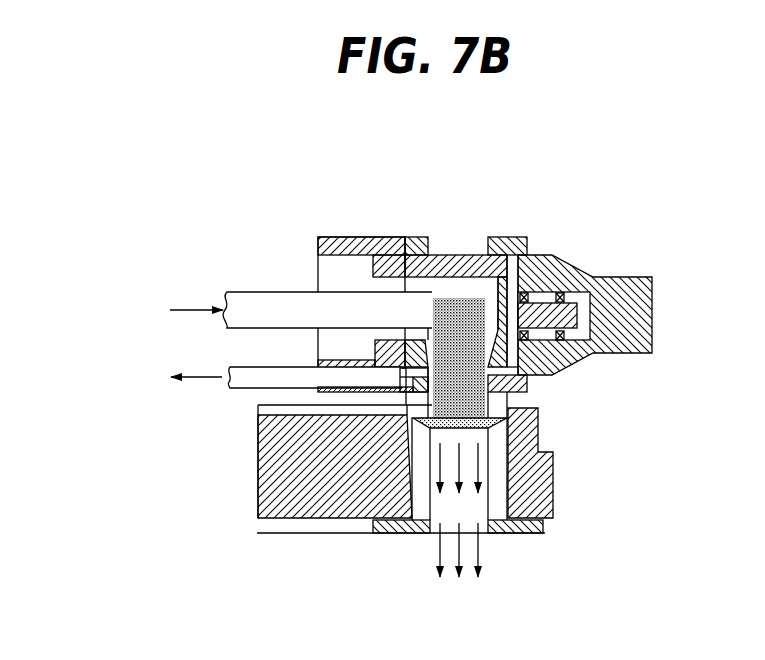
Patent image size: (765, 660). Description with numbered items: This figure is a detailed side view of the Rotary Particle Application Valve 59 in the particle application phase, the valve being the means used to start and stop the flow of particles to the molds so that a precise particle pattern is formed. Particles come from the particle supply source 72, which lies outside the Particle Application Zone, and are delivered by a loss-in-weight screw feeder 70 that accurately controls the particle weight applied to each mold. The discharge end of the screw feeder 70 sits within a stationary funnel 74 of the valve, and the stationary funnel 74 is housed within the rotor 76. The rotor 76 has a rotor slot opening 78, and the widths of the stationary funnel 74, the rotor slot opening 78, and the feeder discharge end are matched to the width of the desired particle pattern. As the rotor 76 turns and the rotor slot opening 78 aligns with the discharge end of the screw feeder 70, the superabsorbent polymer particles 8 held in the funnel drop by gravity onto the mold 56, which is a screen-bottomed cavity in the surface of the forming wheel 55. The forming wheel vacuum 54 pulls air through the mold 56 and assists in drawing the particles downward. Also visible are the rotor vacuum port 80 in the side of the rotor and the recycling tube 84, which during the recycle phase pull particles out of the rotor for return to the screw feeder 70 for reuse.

The Rotary Particle Application Valve 59 is at (493, 194).
The stationary funnel 74 is at (442, 255).
The rotor 76 is at (515, 237).
The rotor slot opening 78 is at (508, 371).
The superabsorbent polymer particles 8 is at (468, 318).
The screw feeder 70 is at (288, 292).
The particle supply source 72 is at (193, 309).
The recycling tube 84 is at (262, 367).
The rotor vacuum port 80 is at (193, 378).
The mold 56 is at (500, 413).
The forming wheel 55 is at (555, 462).
The forming wheel vacuum 54 is at (478, 615).